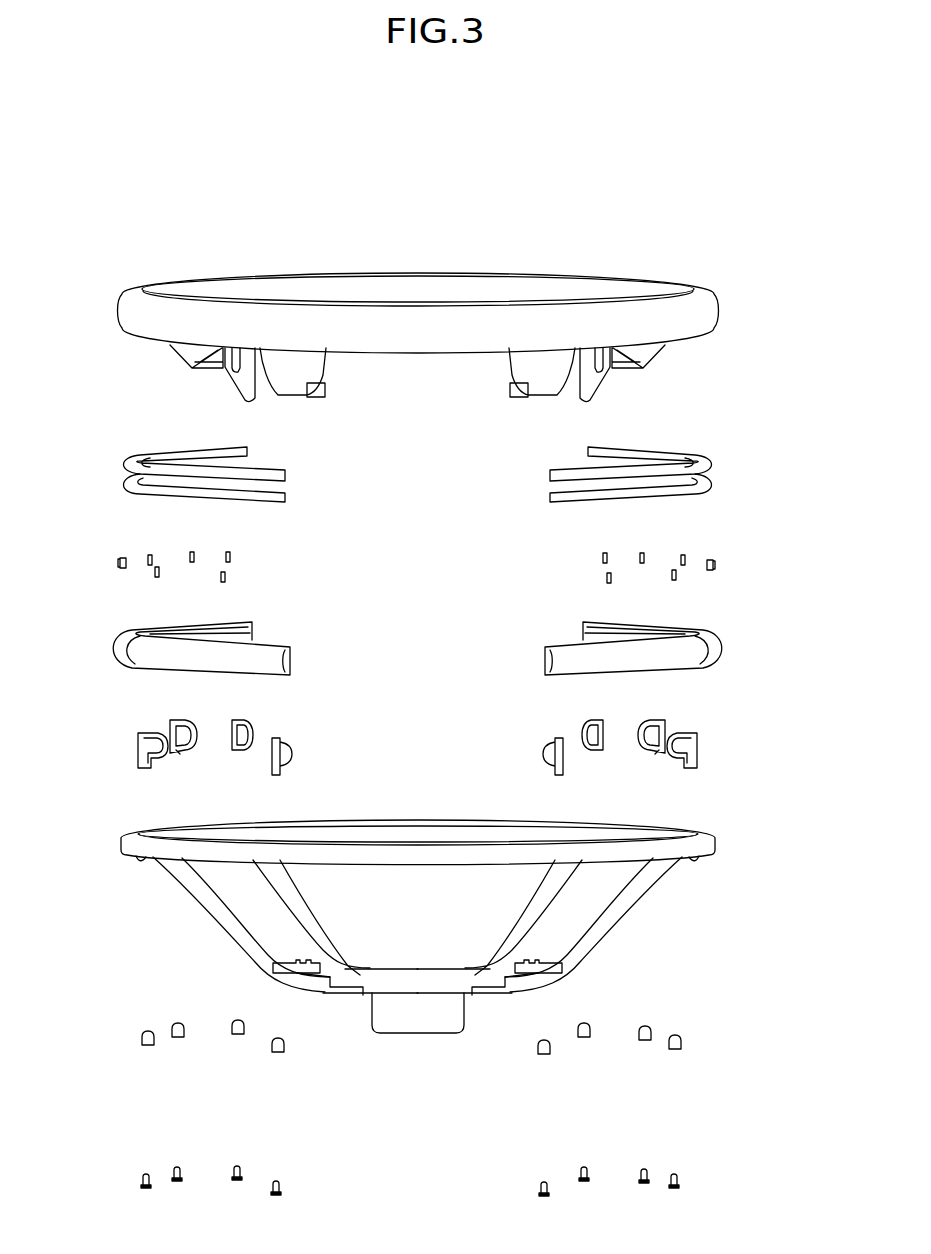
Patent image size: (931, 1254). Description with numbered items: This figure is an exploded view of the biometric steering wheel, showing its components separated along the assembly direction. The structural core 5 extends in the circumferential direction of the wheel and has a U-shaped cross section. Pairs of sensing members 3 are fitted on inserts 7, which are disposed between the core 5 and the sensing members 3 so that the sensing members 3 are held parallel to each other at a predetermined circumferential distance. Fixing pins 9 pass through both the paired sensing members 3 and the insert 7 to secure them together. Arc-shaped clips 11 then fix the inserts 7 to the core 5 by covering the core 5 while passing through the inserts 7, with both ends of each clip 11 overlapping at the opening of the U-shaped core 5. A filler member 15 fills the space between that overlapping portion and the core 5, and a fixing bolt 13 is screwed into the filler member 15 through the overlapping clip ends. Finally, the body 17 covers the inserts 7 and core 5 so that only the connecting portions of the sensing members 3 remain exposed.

The sensing member 3 is at (120, 488).
The core 5 is at (482, 857).
The insert 7 is at (122, 652).
The fixing pin 9 is at (118, 566).
The clip 11 is at (135, 746).
The fixing bolt 13 is at (141, 1178).
The filler member 15 is at (141, 1037).
The body 17 is at (704, 316).